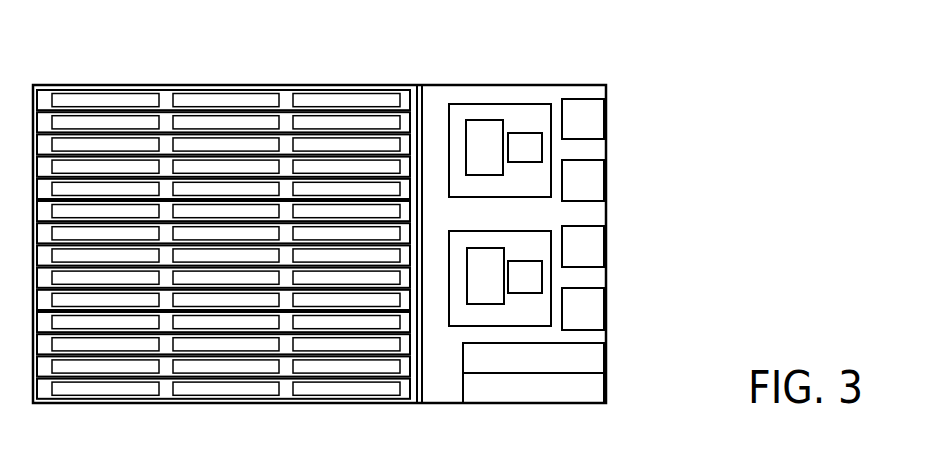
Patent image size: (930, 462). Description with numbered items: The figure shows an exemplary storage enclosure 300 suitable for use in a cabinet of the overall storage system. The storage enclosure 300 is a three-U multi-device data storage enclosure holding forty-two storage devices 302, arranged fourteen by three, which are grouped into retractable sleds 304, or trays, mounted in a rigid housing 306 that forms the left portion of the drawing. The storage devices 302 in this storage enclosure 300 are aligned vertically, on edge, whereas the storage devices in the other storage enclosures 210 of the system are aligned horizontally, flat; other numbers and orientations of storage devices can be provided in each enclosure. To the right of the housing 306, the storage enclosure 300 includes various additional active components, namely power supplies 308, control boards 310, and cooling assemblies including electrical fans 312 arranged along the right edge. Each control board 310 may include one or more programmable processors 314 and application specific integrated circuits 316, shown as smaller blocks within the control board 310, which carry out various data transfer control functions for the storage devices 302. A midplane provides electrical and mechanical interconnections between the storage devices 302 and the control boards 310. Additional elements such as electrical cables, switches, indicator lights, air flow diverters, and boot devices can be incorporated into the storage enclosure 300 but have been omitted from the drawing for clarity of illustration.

The storage enclosure 300 is at (699, 67).
The storage devices 302 is at (101, 97).
The retractable sleds 304 is at (288, 93).
The rigid housing 306 is at (165, 404).
The storage enclosures 210 is at (422, 363).
The control boards 310 is at (542, 112).
The programmable processors 314 is at (475, 120).
The application specific integrated circuits (ASICs) 316 is at (523, 143).
The electrical fans 312 is at (594, 121).
The power supplies 308 is at (570, 362).